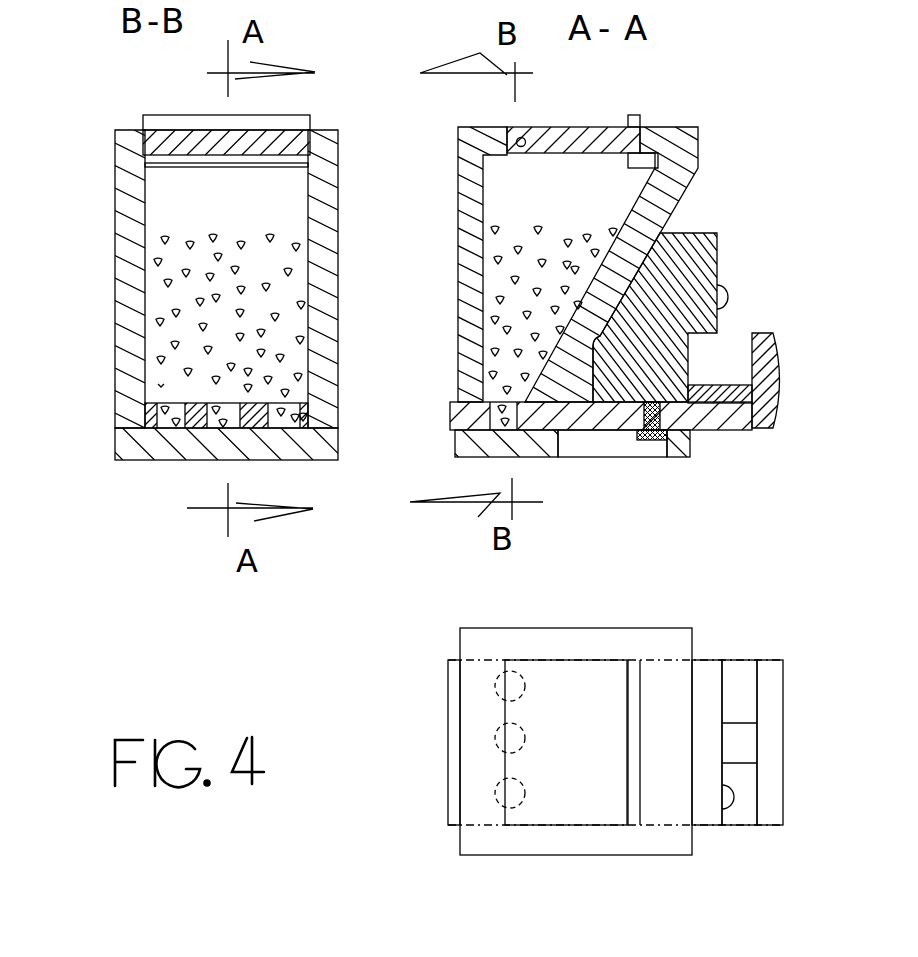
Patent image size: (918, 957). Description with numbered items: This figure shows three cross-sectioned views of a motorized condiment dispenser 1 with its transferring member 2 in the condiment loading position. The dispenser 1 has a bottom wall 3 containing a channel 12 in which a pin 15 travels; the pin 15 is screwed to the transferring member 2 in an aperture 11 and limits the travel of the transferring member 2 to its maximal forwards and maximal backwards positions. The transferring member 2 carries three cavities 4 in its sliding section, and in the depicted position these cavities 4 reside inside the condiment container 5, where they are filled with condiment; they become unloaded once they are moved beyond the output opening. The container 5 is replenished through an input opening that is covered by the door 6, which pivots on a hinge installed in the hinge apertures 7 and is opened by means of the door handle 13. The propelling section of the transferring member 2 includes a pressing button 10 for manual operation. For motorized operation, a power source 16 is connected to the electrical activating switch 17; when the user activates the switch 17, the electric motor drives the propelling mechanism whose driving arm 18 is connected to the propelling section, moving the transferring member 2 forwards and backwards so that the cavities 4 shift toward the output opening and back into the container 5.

The condiment dispenser 1 is at (379, 524).
The transferring member 2 is at (464, 625).
The bottom wall 3 is at (483, 455).
The cavities 4 is at (350, 553).
The condiment container 5 is at (517, 300).
The door 6 is at (391, 495).
The hinge apertures 7 is at (518, 137).
The pressing button 10 is at (754, 586).
The aperture 11 is at (645, 430).
The channel 12 is at (600, 440).
The door handle 13 is at (381, 483).
The pin 15 is at (660, 440).
The power source 16 is at (679, 510).
The activating switch 17 is at (728, 581).
The driving arm 18 is at (736, 605).